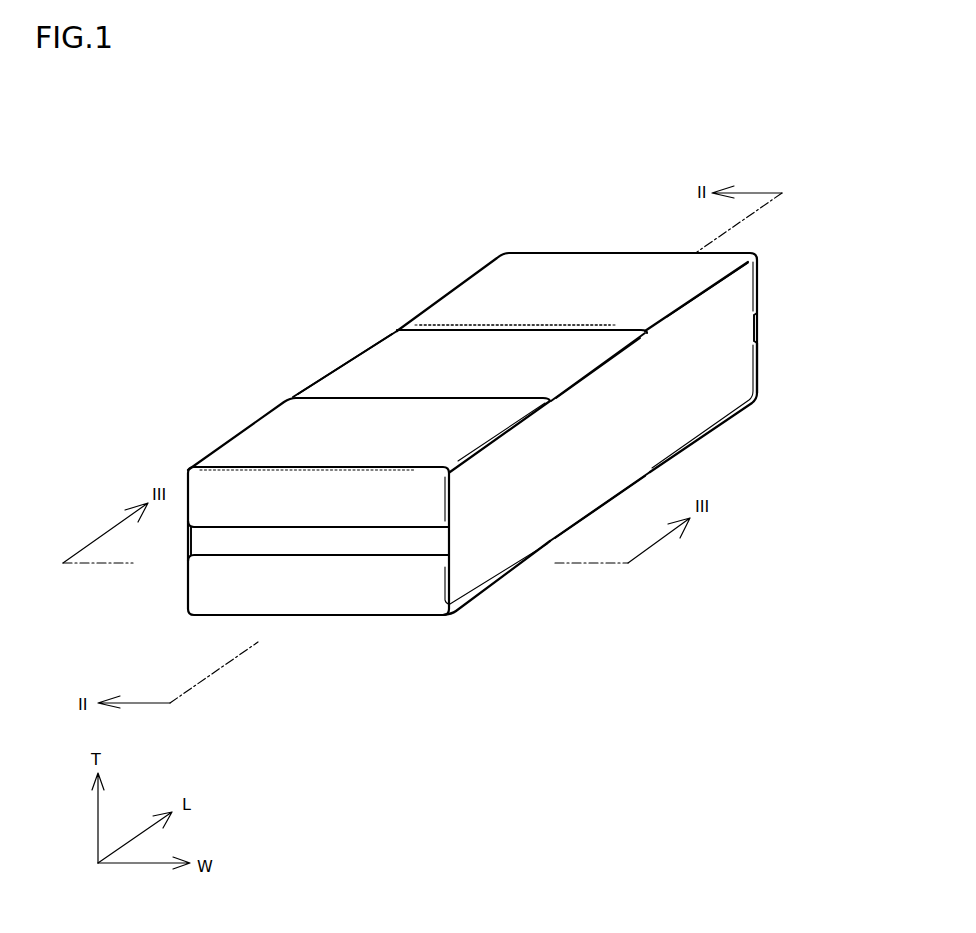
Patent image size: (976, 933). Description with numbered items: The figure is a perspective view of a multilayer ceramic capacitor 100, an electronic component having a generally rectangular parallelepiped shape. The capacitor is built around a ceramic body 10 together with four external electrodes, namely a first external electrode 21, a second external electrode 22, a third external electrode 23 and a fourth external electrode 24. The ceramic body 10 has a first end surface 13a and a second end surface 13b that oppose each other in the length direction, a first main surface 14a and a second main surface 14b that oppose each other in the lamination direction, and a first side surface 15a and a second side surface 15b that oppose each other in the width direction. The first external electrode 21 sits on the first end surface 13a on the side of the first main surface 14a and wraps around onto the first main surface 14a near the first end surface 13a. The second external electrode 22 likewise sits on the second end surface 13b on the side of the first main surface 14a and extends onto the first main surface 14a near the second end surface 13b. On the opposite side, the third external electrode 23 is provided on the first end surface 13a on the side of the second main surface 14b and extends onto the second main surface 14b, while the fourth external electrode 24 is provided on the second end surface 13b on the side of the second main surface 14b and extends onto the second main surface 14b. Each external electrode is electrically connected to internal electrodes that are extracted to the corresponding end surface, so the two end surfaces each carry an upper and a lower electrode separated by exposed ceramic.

The multilayer ceramic capacitor 100 is at (400, 250).
The ceramic body 10 is at (327, 378).
The first end surface 13a is at (331, 540).
The second end surface 13b is at (757, 327).
The first main surface 14a is at (393, 363).
The second main surface 14b is at (590, 481).
The first side surface 15a is at (627, 407).
The second side surface 15b is at (322, 395).
The first external electrode 21 is at (240, 452).
The second external electrode 22 is at (554, 258).
The third external electrode 23 is at (410, 617).
The fourth external electrode 24 is at (760, 381).